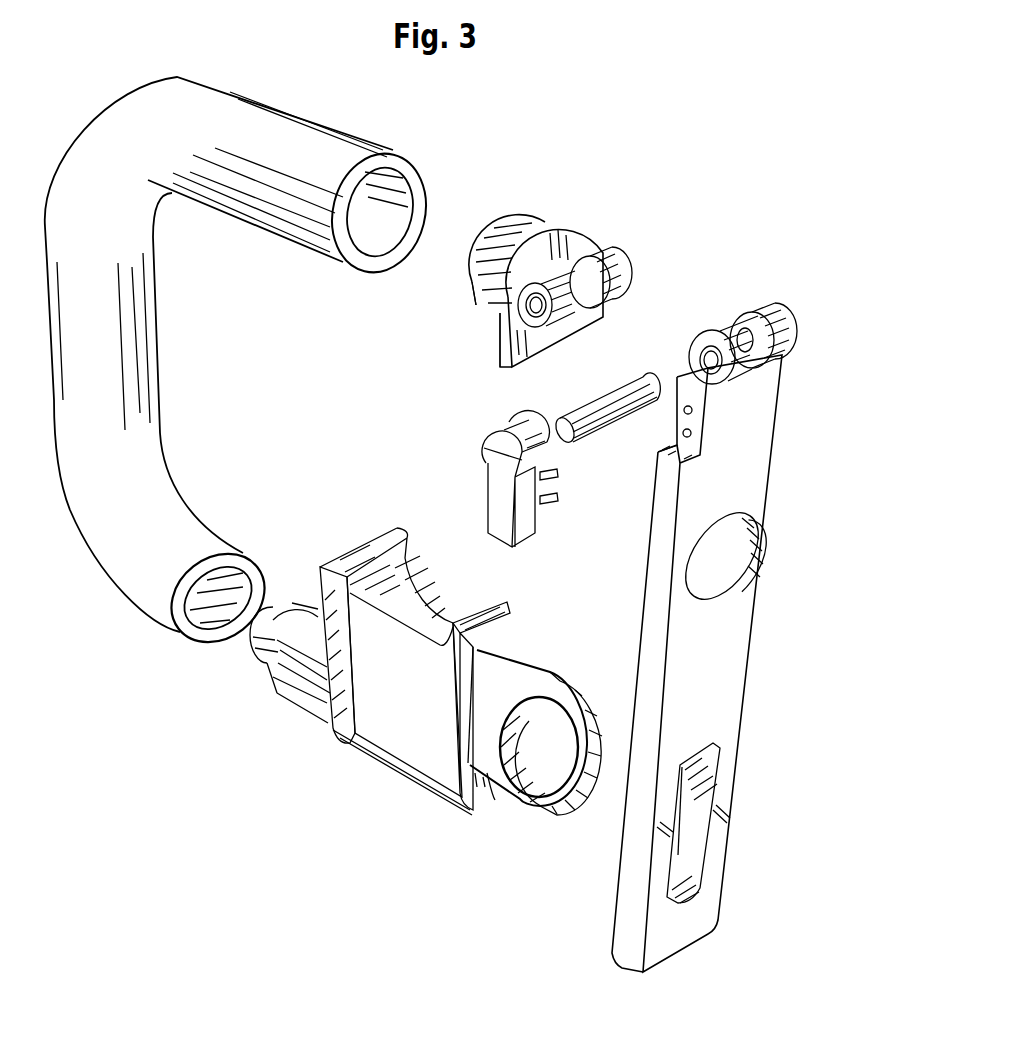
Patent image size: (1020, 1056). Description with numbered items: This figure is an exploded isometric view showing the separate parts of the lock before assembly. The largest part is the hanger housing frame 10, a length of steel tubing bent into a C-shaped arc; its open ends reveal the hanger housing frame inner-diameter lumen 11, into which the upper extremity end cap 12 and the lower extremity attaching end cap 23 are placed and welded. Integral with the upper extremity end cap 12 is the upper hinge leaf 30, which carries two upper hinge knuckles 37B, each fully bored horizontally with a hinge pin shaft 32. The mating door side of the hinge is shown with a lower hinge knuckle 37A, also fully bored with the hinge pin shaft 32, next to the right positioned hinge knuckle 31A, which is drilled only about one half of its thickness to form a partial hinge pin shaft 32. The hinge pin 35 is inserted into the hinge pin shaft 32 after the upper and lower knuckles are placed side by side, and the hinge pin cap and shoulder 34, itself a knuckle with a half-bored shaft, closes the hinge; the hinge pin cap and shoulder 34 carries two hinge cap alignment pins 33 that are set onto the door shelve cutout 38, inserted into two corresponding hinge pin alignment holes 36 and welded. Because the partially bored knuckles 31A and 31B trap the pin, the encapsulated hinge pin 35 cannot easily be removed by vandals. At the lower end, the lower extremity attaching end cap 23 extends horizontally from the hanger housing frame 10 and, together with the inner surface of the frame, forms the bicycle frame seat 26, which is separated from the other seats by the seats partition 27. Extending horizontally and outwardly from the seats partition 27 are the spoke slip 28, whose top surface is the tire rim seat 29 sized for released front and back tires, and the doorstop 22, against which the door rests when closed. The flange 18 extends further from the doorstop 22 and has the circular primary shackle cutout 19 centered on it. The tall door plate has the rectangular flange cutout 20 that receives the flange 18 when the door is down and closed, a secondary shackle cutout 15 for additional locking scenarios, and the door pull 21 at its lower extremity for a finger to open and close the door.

The hanger housing frame 10 is at (110, 97).
The hanger housing frame inner-diameter lumen 11 is at (378, 233).
The upper extremity end cap 12 is at (490, 253).
The secondary shackle cutout 15 is at (702, 548).
The flange 18 is at (555, 807).
The primary shackle cutout 19 is at (541, 720).
The flange cutout 20 is at (687, 852).
The door pull 21 is at (677, 930).
The doorstop 22 is at (503, 601).
The lower extremity attaching end cap 23 is at (257, 645).
The bicycle frame seat 26 is at (243, 568).
The seats partition 27 is at (368, 541).
The spoke slip 28 is at (410, 727).
The tire rim seat 29 is at (437, 600).
The upper hinge leaf 30 is at (602, 232).
The right positioned hinge knuckle 31A is at (750, 320).
The partially bored knuckle 31B is at (490, 433).
The hinge pin shaft 32 is at (700, 360).
The hinge cap alignment pins 33 is at (555, 502).
The hinge pin cap and shoulder 34 is at (487, 498).
The hinge pin 35 is at (580, 413).
The hinge pin alignment holes 36 is at (683, 410).
The lower hinge knuckle 37A is at (715, 327).
The upper hinge knuckles 37B is at (547, 280).
The door shelve cutout 38 is at (667, 443).